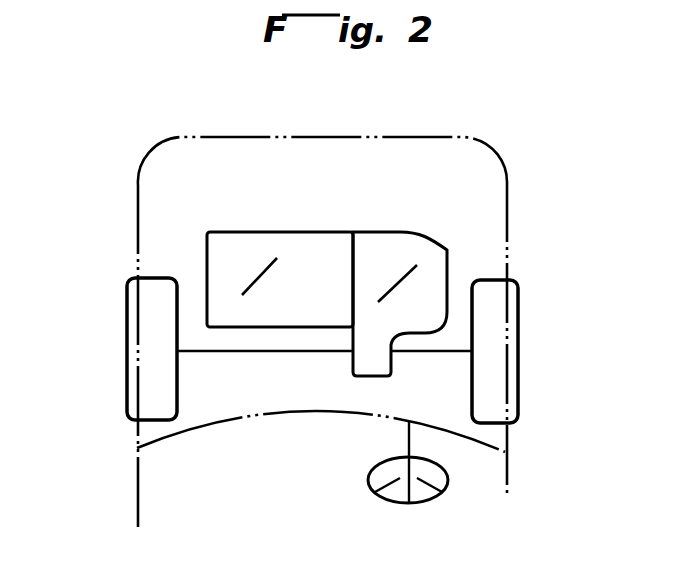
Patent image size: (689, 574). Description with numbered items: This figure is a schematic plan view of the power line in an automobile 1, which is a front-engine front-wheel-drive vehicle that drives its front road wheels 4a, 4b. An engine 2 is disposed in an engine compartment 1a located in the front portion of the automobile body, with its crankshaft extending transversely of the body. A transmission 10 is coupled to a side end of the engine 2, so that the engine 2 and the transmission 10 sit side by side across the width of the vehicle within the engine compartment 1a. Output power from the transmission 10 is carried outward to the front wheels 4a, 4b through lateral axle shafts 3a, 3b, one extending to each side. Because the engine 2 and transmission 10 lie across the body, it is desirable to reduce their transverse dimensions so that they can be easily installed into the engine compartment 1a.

The automobile 1 is at (507, 198).
The engine compartment 1a is at (392, 152).
The engine 2 is at (258, 238).
The transmission 10 is at (392, 232).
The lateral axle shaft 3a is at (248, 352).
The lateral axle shaft 3b is at (422, 352).
The front road wheel 4a is at (127, 360).
The front road wheel 4b is at (518, 362).